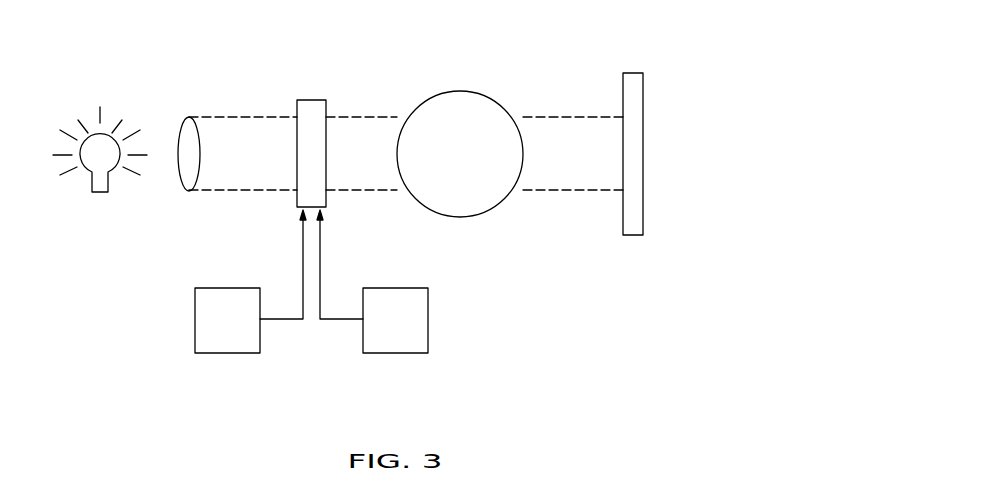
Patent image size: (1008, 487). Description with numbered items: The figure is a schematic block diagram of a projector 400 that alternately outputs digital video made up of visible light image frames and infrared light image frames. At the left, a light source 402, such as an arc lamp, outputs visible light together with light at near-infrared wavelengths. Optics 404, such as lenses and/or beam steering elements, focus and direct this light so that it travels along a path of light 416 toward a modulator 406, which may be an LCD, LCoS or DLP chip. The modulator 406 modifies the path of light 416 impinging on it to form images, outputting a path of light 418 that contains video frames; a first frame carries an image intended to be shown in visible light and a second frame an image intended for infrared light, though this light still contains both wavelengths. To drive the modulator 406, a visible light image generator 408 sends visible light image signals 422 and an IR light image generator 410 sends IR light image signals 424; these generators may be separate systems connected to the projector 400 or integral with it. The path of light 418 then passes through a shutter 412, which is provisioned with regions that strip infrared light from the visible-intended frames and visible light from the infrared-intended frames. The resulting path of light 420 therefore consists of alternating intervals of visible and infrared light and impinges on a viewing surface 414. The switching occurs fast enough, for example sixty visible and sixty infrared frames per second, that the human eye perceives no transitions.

The projector 400 is at (310, 50).
The light source 402 is at (100, 193).
The optics 404 is at (189, 192).
The modulator 406 is at (327, 198).
The visible light image generator 408 is at (227, 354).
The IR light image generator 410 is at (398, 354).
The shutter 412 is at (463, 90).
The viewing surface 414 is at (636, 72).
The path of light 416 is at (243, 116).
The path of light 418 is at (364, 116).
The path of light 420 is at (563, 116).
The visible light image signals 422 is at (302, 258).
The IR light image signals 424 is at (321, 258).